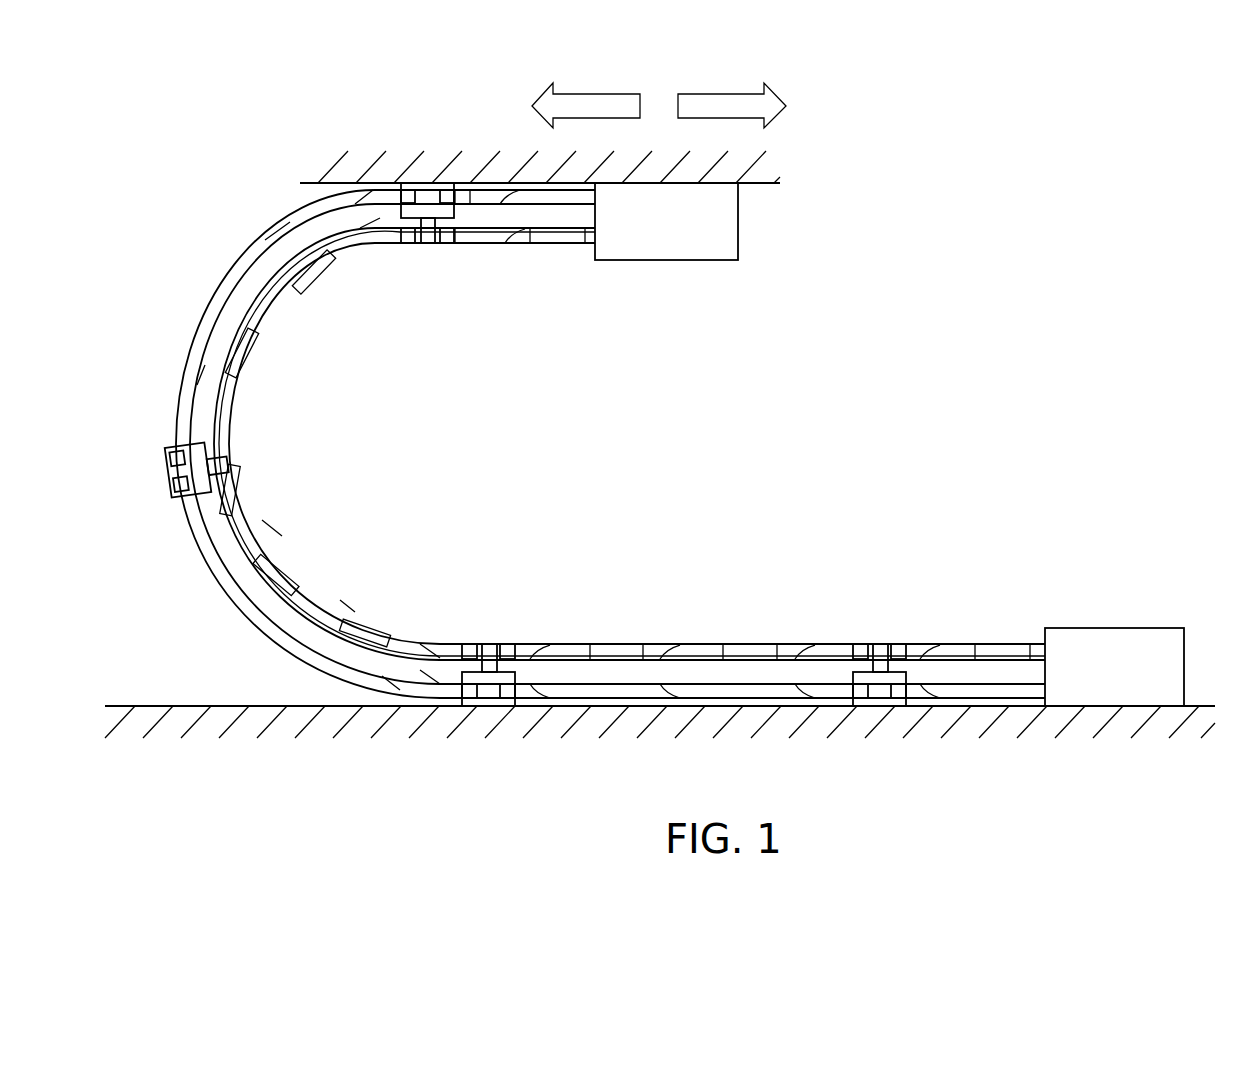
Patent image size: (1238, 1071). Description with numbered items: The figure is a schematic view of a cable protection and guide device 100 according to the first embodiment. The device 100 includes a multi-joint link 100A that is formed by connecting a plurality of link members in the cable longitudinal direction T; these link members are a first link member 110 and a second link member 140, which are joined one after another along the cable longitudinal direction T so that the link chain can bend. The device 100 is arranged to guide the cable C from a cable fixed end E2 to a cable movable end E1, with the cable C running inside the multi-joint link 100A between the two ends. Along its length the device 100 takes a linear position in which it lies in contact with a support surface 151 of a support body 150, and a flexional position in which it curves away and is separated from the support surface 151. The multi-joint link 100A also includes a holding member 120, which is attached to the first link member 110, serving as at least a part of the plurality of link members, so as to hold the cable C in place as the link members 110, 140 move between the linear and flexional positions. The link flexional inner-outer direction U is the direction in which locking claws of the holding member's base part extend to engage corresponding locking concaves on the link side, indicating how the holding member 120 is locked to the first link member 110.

The cable protection and guide device 100 is at (159, 128).
The multi-joint link 100A is at (135, 347).
The first link member 110 is at (470, 243).
The holding member 120 is at (228, 451).
The second link member 140 is at (253, 358).
The support body 150 is at (162, 652).
The support surface 151 is at (232, 704).
The cable C is at (202, 324).
The cable longitudinal direction T is at (140, 397).
The link flexional inner-outer direction U is at (438, 451).
The cable movable end E1 is at (678, 239).
The cable fixed end E2 is at (1111, 638).